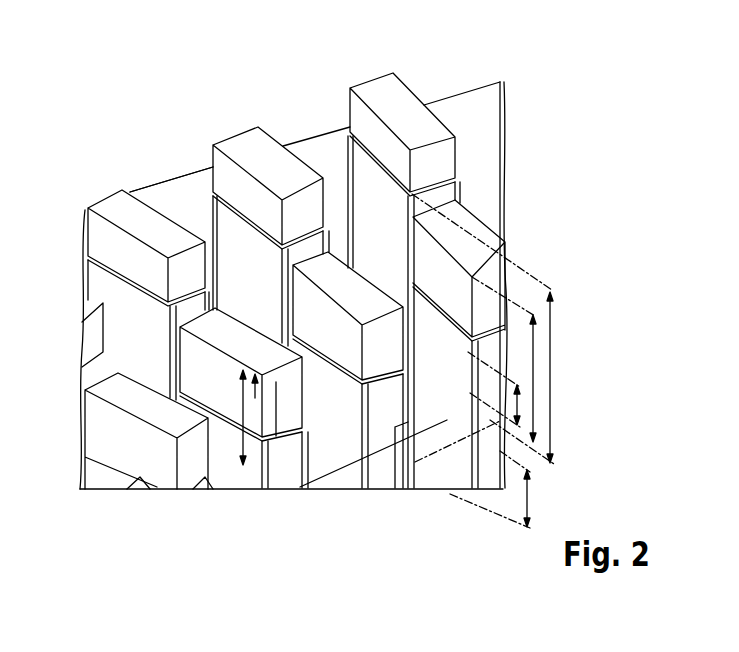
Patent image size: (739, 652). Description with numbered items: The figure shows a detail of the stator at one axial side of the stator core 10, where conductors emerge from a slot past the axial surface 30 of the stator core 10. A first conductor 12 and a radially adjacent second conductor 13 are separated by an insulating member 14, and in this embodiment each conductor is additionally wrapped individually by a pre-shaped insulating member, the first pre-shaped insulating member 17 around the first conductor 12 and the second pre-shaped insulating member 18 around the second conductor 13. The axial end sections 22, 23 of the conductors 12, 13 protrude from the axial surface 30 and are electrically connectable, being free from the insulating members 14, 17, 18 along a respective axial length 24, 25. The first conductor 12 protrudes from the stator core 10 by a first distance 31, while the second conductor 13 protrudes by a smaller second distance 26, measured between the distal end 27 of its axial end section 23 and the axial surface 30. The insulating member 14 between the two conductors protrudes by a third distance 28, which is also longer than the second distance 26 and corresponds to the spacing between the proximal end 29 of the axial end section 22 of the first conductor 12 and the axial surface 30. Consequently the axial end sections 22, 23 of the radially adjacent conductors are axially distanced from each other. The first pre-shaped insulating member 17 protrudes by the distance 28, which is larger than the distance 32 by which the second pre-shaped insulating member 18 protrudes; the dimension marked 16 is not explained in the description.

The stator core 10 is at (427, 485).
The first conductor 12 is at (246, 150).
The second conductor 13 is at (340, 268).
The insulating member 14 is at (170, 179).
The base thickness 16 is at (527, 493).
The first pre-shaped insulating member 17 is at (140, 305).
The second pre-shaped insulating member 18 is at (288, 462).
The axial end section of the first conductor 22 is at (213, 167).
The axial end section of the second conductor 23 is at (347, 312).
The axial length 24 is at (193, 187).
The axial length 25 is at (327, 430).
The second distance 26 is at (242, 462).
The distal end 27 is at (255, 400).
The third distance 28 is at (533, 373).
The proximal end 29 is at (377, 150).
The axial surface 30 is at (322, 455).
The first distance 31 is at (550, 362).
The distance 32 is at (517, 407).